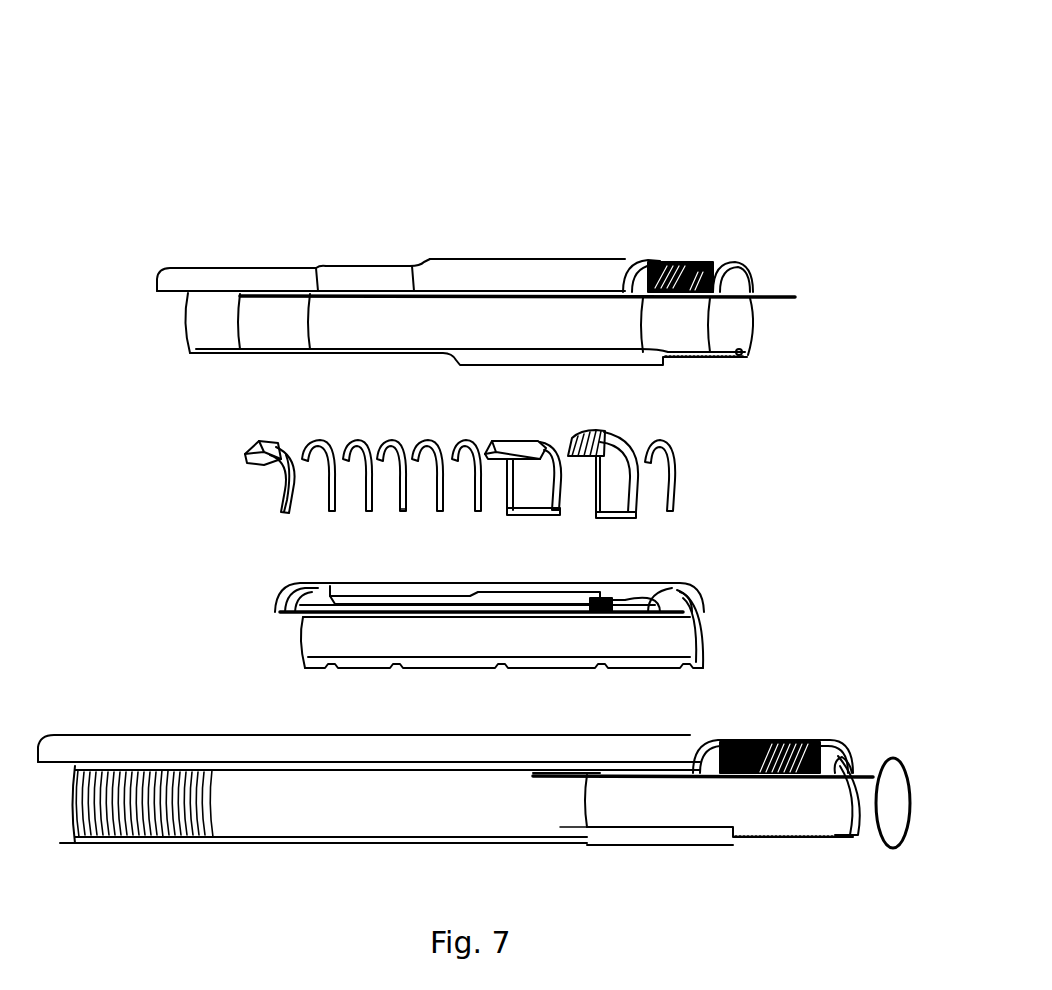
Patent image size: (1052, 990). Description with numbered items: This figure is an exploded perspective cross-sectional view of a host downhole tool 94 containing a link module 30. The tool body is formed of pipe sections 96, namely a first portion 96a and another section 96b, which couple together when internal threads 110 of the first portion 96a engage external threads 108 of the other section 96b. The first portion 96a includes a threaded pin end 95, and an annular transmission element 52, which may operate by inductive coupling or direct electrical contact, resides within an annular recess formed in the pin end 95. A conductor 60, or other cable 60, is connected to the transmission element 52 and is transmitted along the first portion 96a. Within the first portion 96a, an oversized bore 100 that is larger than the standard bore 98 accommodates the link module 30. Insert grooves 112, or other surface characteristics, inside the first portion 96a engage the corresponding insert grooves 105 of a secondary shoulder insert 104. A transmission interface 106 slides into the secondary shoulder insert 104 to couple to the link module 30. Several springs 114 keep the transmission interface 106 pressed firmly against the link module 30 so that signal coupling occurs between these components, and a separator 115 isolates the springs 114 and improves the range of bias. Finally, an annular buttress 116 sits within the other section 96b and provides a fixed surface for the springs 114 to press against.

The host downhole tool 94 is at (206, 97).
The pipe section 96 is at (252, 250).
The first portion 96a is at (500, 752).
The other section 96b is at (500, 270).
The external threads 108 is at (680, 268).
The conductor 60 is at (770, 297).
The annular buttress 116 is at (256, 445).
The springs 114 is at (456, 450).
The separator 115 is at (403, 512).
The transmission interface 106 is at (545, 458).
The insert grooves 105 is at (606, 438).
The secondary shoulder insert 104 is at (618, 468).
The link module 30 is at (636, 590).
The threaded pin end 95 is at (777, 742).
The annular transmission element 52 is at (898, 752).
The internal threads 110 is at (105, 838).
The insert grooves 112 is at (190, 840).
The oversized bore 100 is at (556, 840).
The standard bore 98 is at (655, 830).